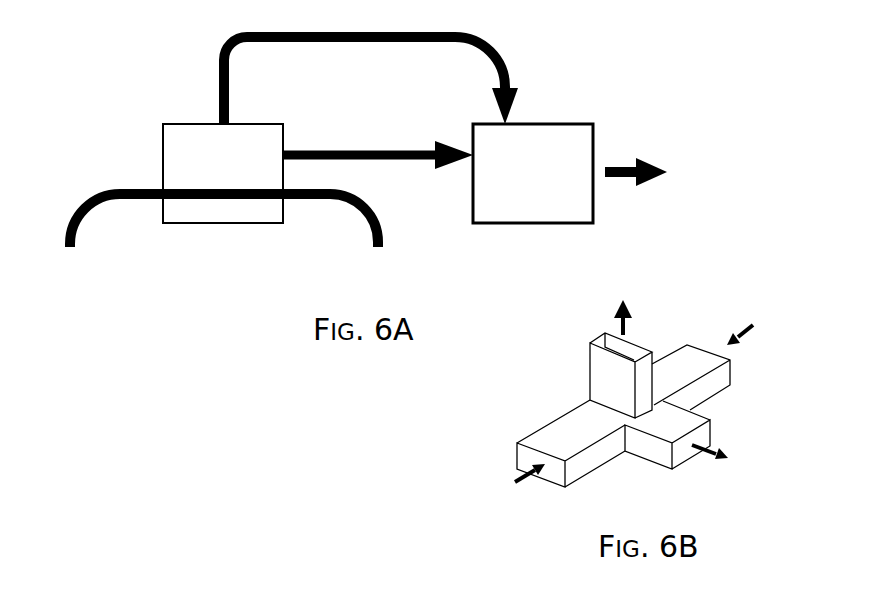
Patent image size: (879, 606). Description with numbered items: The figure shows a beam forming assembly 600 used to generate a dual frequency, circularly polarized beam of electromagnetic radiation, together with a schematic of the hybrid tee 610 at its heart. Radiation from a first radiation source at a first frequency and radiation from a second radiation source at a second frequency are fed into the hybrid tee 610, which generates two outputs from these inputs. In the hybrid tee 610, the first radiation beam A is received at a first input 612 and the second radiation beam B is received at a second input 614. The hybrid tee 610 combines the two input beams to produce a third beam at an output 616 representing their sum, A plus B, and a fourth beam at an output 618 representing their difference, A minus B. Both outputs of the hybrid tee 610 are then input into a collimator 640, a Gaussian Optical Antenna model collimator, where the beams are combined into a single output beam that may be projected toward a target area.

In FIG. 6A, the dual-frequency transmitter system 600 is at (171, 28).
In FIG. 6A, the hybrid tee 610 is at (175, 123).
In FIG. 6B, the hybrid tee 610 is at (778, 438).
In FIG. 6B, the first input 612 is at (521, 436).
In FIG. 6B, the second input 614 is at (730, 378).
In FIG. 6B, the output 616 is at (648, 459).
In FIG. 6B, the output 618 is at (598, 343).
In FIG. 6A, the collimator 640 is at (527, 223).